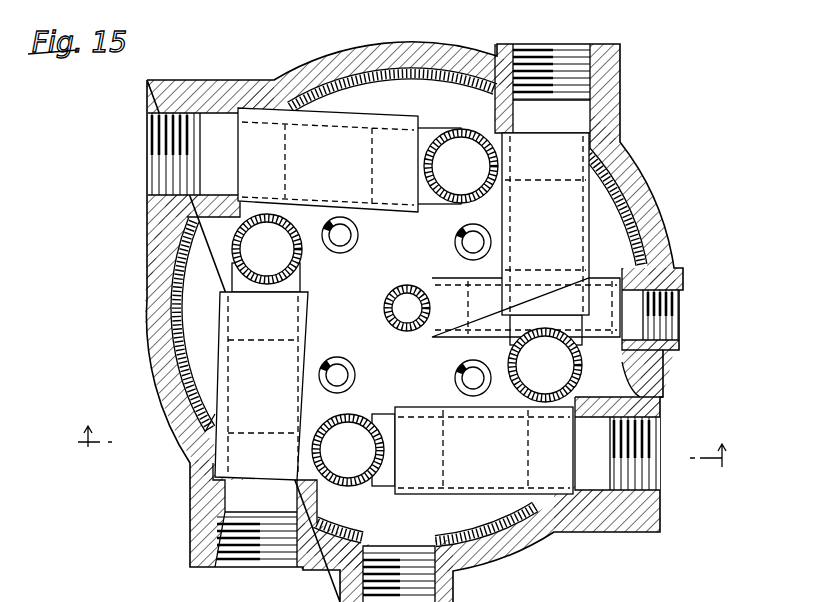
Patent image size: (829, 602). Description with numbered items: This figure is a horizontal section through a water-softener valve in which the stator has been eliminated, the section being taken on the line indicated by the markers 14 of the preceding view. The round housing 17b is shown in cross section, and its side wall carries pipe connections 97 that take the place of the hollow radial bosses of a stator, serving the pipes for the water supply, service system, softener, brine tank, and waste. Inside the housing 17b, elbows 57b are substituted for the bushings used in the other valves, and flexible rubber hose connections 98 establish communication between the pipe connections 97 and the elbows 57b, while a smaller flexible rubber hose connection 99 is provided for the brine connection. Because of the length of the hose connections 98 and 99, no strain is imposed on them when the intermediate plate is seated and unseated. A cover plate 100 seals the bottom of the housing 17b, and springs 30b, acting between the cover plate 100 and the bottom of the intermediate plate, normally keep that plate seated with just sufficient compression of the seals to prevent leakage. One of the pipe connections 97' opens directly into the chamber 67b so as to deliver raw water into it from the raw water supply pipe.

The housing 17b is at (657, 232).
The cover plate 100 is at (187, 325).
The elbows 57b is at (302, 264).
The flexible rubber hose connections 98 is at (309, 347).
The smaller flexible rubber hose connection 99 is at (478, 337).
The springs 30b is at (458, 385).
The pipe connections 97 is at (628, 464).
The pipe connection 97' is at (429, 571).
The chamber 67b is at (530, 537).
The section line 14 is at (402, 453).